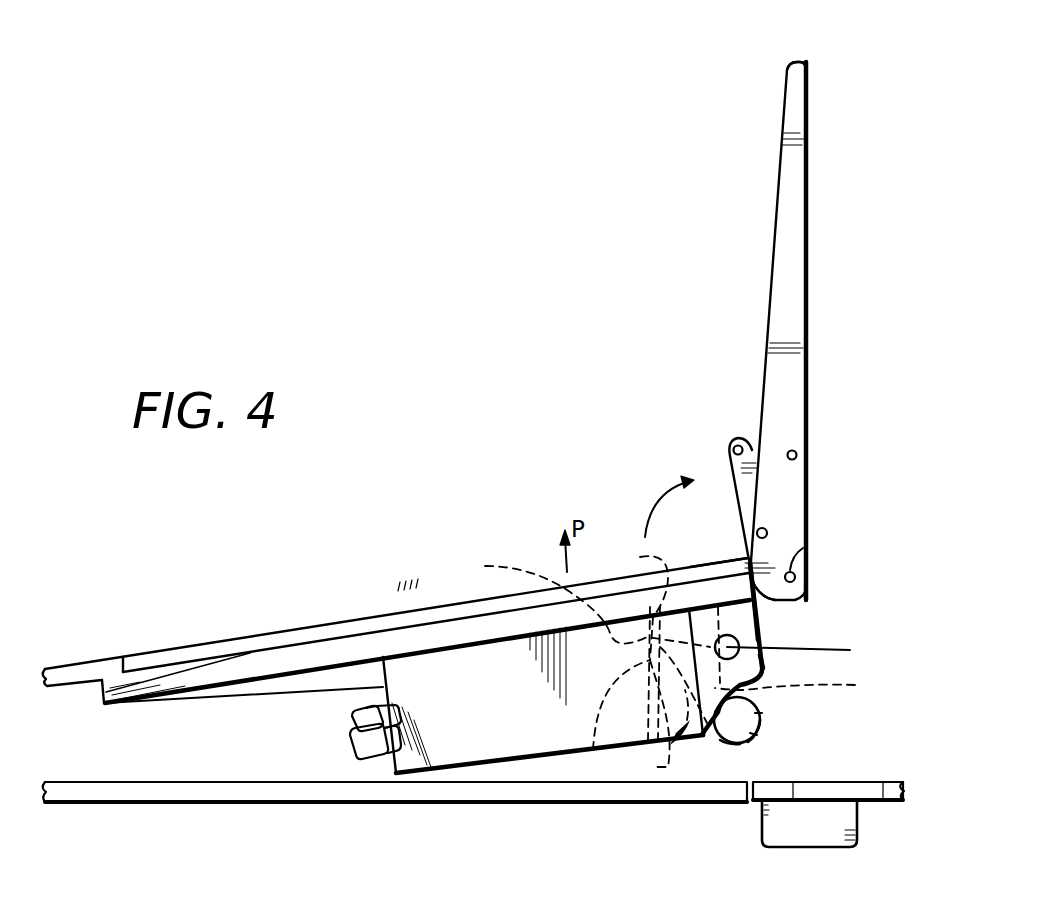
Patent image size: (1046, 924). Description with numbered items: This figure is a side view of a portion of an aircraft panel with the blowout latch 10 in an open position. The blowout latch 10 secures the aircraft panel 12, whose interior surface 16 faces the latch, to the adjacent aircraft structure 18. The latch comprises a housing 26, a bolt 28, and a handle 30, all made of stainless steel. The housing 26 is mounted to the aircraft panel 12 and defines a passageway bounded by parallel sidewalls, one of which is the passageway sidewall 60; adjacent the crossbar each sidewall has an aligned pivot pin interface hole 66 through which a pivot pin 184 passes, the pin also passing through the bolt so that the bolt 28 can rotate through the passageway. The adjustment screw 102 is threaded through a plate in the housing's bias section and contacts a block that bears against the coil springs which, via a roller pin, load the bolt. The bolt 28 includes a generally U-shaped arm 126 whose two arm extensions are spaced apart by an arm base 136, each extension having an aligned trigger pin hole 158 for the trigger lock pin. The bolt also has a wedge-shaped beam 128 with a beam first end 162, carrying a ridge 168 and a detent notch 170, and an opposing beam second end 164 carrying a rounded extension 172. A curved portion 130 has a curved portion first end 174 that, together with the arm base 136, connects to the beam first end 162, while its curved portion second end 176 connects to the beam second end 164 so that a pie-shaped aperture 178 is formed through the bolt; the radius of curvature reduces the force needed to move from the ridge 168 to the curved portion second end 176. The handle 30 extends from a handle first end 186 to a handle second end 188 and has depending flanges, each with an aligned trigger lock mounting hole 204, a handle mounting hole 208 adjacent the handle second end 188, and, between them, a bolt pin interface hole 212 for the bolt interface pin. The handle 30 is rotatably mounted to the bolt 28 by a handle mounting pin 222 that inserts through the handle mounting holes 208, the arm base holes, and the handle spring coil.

The blowout latch 10 is at (447, 440).
The aircraft panel 12 is at (85, 663).
The interior surface 16 is at (68, 690).
The aircraft structure 18 is at (853, 790).
The housing 26 is at (292, 656).
The bolt 28 is at (760, 713).
The handle 30 is at (850, 183).
The passageway sidewall 60 is at (758, 628).
The pivot pin interface hole 66 is at (765, 660).
The adjustment screw 102 is at (355, 740).
The arm 126 is at (740, 500).
The wedge-shaped beam 128 is at (808, 688).
The curved portion 130 is at (655, 767).
The arm base 136 is at (758, 608).
The trigger pin hole 158 is at (738, 445).
The beam first end 162 is at (570, 645).
The beam second end 164 is at (745, 746).
The ridge 168 is at (658, 611).
The detent notch 170 is at (703, 565).
The rounded extension 172 is at (755, 734).
The curved portion first end 174 is at (593, 752).
The curved portion second end 176 is at (703, 735).
The pie-shaped aperture 178 is at (687, 722).
The pivot pin 184 is at (814, 656).
The handle first end 186 is at (797, 62).
The handle second end 188 is at (807, 590).
The trigger lock mounting hole 204 is at (800, 455).
The handle mounting hole 208 is at (803, 548).
The bolt pin interface hole 212 is at (772, 533).
The handle mounting pin 222 is at (796, 578).